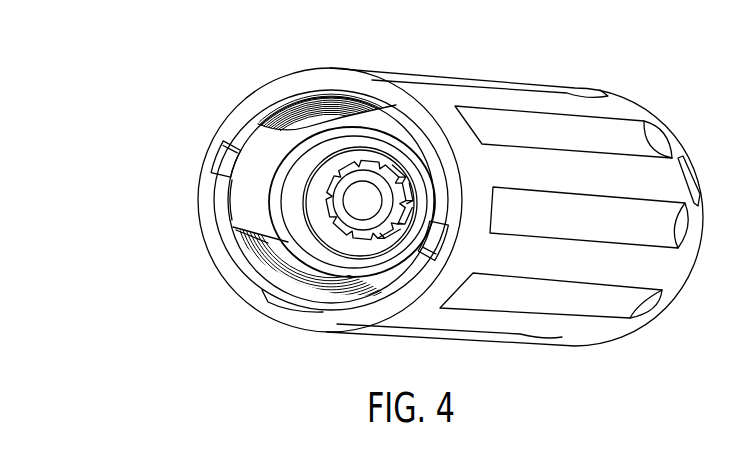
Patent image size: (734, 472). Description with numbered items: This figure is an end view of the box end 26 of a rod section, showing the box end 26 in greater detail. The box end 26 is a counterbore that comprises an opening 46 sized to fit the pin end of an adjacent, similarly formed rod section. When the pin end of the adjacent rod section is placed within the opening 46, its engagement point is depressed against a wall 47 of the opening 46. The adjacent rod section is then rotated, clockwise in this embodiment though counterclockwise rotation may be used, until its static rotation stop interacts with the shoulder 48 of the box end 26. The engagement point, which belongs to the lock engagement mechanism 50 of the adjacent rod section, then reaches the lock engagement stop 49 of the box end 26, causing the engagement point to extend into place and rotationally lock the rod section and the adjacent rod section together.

The box end 26 is at (307, 70).
The opening 46 is at (208, 271).
The wall 47 is at (252, 128).
The shoulder 48 is at (383, 110).
The lock engagement stop 49 is at (223, 158).
The lock engagement mechanism 50 is at (316, 200).